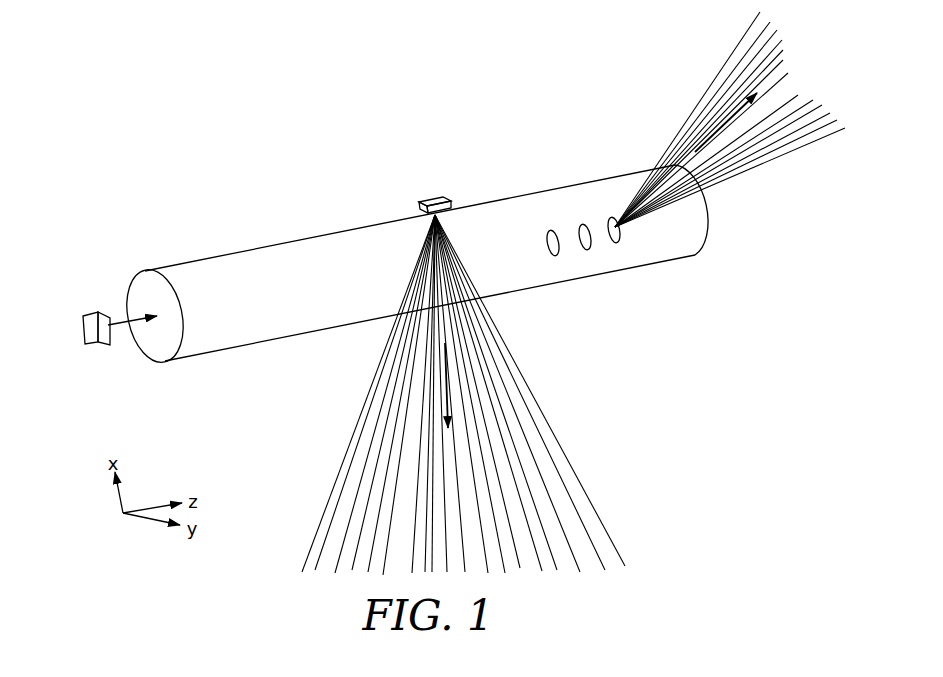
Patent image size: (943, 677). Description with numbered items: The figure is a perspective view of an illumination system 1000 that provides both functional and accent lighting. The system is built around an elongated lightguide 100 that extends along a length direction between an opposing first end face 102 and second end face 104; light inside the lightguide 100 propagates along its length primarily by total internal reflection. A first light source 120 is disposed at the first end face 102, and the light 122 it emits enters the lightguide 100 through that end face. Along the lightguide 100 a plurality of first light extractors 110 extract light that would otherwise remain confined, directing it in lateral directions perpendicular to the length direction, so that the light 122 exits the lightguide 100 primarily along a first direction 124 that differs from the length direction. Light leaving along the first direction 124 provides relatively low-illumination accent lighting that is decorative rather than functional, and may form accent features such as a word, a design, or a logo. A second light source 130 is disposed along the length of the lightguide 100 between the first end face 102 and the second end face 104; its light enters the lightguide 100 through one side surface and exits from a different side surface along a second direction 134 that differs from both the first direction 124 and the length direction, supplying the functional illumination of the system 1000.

The illumination system 1000 is at (202, 152).
The elongated lightguide 100 is at (213, 350).
The first end face 102 is at (131, 292).
The second end face 104 is at (708, 230).
The first light extractors 110 is at (553, 230).
The first light source 120 is at (88, 328).
The light emitted by the first light source 122 is at (130, 323).
The first direction 124 is at (717, 128).
The second light source 130 is at (432, 197).
The second direction 134 is at (448, 373).